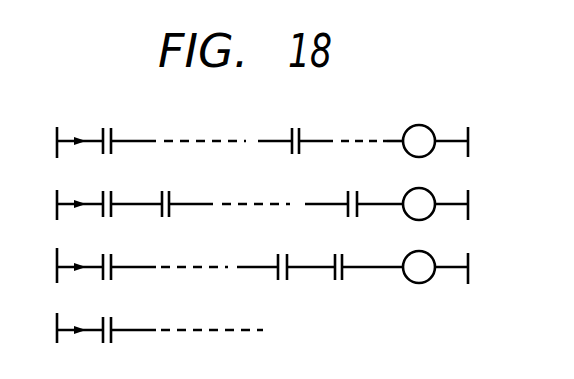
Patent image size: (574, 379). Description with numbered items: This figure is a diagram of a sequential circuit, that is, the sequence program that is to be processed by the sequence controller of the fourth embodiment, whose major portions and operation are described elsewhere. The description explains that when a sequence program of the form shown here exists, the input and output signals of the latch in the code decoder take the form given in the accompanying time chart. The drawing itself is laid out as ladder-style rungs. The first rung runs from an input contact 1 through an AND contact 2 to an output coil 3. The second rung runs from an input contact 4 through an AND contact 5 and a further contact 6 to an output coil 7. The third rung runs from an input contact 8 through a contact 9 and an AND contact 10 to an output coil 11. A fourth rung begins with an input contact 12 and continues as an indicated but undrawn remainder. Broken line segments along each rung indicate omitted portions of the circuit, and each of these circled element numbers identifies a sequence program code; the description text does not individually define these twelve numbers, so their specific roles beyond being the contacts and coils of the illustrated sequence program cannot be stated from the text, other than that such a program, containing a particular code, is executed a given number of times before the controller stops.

The input contact 1 is at (91, 124).
The AND contact 2 is at (290, 125).
The output coil 3 is at (411, 126).
The input contact 4 is at (91, 194).
The AND contact 5 is at (163, 194).
The contact 6 is at (339, 194).
The output coil 7 is at (407, 195).
The input contact 8 is at (91, 256).
The contact 9 is at (269, 257).
The AND contact 10 is at (332, 257).
The output coil 11 is at (407, 258).
The input contact 12 is at (91, 320).